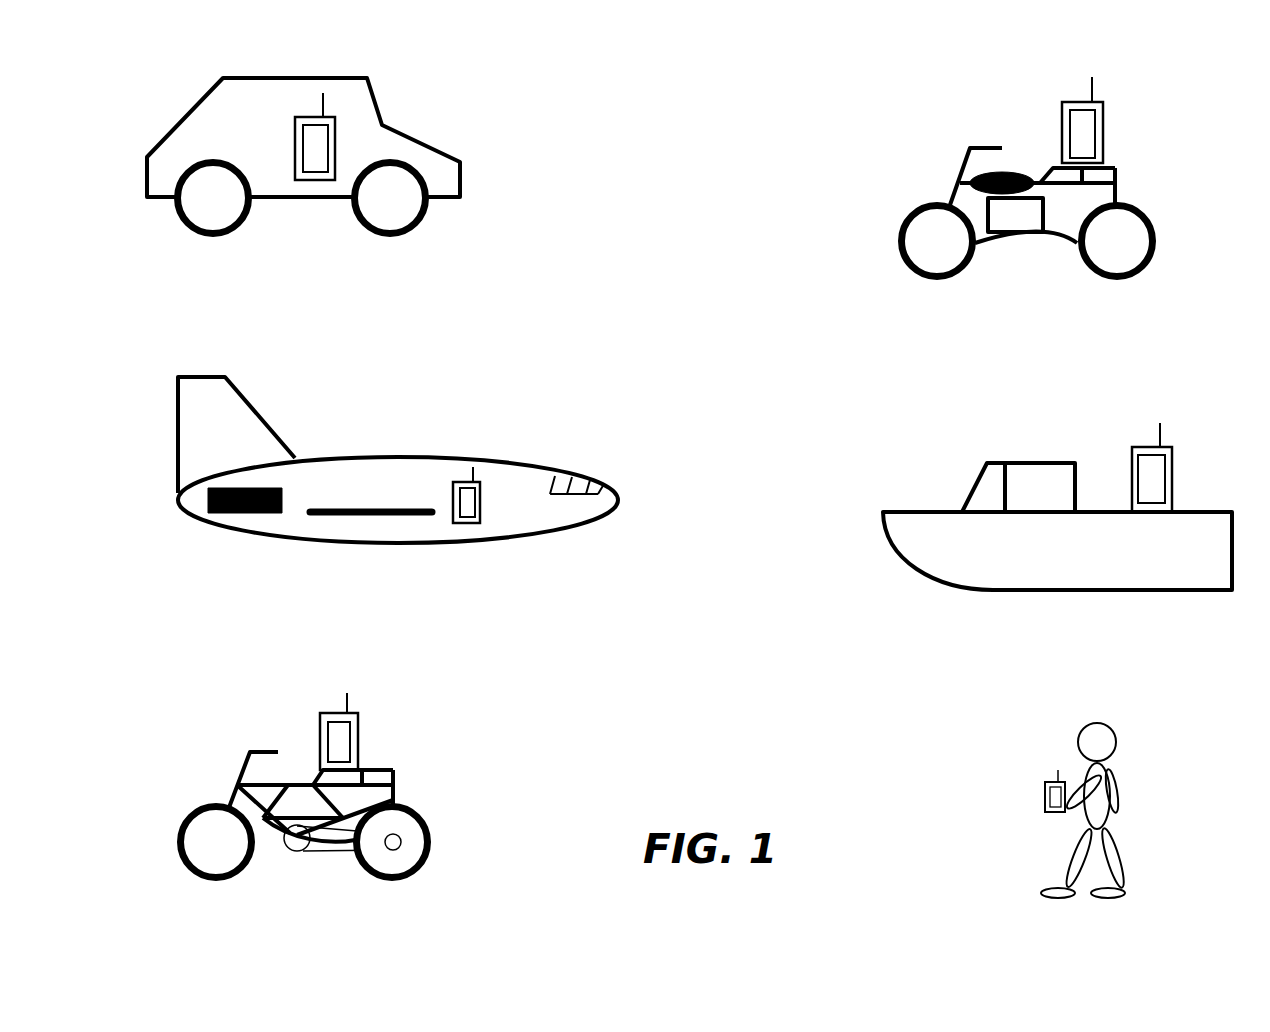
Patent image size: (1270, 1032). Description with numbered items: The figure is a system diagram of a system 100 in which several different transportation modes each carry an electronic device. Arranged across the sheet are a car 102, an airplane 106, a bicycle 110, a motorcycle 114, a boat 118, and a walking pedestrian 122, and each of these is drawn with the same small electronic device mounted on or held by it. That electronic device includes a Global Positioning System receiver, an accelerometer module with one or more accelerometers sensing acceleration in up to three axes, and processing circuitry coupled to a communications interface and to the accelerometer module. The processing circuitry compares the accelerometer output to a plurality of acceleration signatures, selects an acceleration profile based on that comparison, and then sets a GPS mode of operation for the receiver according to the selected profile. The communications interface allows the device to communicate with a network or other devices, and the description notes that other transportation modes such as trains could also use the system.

The system 100 is at (666, 481).
The car 102 is at (183, 107).
The airplane 106 is at (208, 455).
The bicycle 110 is at (237, 780).
The motorcycle 114 is at (958, 179).
The boat 118 is at (920, 510).
The person 122 is at (1093, 738).